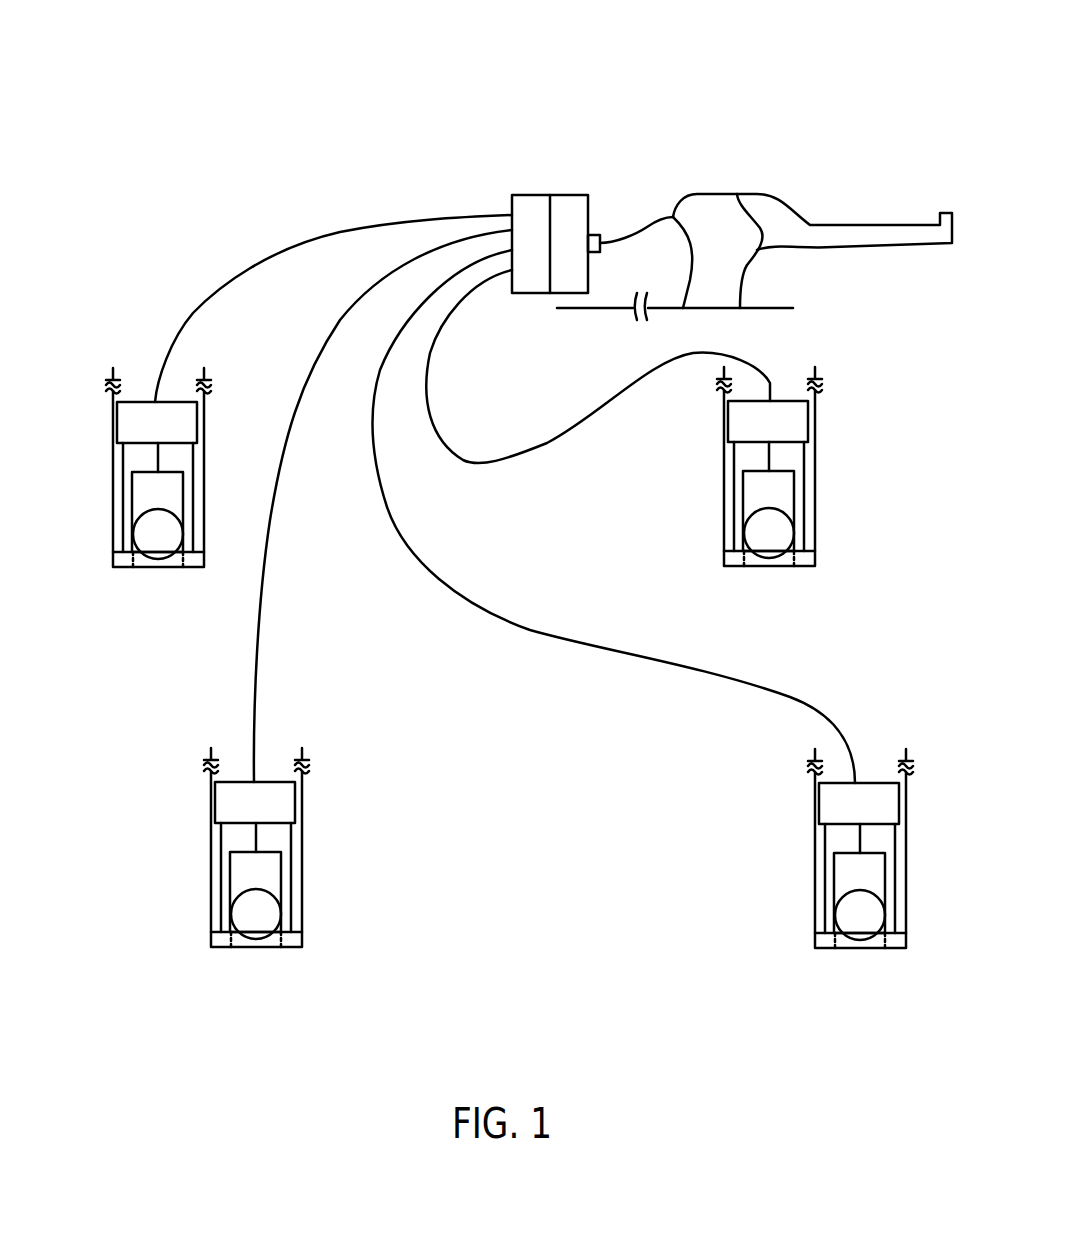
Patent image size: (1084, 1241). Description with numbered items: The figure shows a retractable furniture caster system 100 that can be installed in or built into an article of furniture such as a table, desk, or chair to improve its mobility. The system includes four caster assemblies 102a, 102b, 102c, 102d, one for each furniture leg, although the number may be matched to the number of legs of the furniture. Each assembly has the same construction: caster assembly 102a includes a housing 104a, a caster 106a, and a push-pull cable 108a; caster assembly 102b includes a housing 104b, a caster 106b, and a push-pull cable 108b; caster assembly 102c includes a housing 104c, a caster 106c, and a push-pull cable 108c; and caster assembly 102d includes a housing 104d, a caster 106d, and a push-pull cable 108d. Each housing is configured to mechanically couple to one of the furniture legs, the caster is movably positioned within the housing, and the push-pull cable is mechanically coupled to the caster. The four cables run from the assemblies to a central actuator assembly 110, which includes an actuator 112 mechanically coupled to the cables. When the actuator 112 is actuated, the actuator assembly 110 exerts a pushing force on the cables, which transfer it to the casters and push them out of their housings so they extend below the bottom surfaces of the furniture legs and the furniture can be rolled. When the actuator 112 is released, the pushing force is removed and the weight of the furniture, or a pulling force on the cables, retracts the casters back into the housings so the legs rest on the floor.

The retractable furniture caster system 100 is at (540, 52).
The actuator assembly 110 is at (645, 125).
The actuator 112 is at (765, 193).
The caster assembly 102a is at (152, 597).
The caster assembly 102b is at (258, 976).
The caster assembly 102c is at (858, 976).
The caster assembly 102d is at (770, 590).
The housing 104a is at (117, 423).
The housing 104b is at (215, 805).
The housing 104c is at (819, 805).
The housing 104d is at (809, 422).
The caster 106a is at (133, 535).
The caster 106b is at (231, 917).
The caster 106c is at (835, 917).
The caster 106d is at (795, 533).
The push-pull cable 108a is at (165, 362).
The push-pull cable 108b is at (252, 732).
The push-pull cable 108c is at (852, 742).
The push-pull cable 108d is at (770, 384).